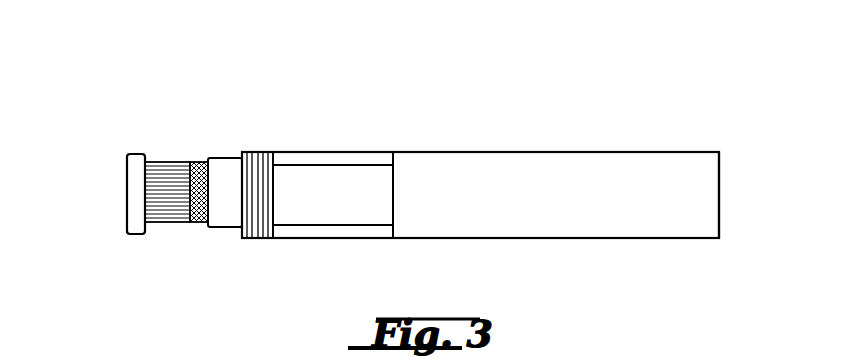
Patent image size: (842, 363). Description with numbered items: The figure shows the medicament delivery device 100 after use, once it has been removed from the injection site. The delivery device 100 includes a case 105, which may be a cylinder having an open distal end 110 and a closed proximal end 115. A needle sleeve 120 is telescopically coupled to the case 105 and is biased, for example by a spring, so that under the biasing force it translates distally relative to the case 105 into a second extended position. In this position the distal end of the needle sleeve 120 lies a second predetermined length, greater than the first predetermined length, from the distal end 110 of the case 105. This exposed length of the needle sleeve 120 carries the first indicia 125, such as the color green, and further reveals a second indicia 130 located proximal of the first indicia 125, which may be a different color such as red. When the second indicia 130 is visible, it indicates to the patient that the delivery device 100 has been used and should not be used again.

The medicament delivery device 100 is at (681, 103).
The case 105 is at (508, 152).
The distal end 110 is at (222, 158).
The proximal end 115 is at (719, 240).
The needle sleeve 120 is at (175, 228).
The first indicia 125 is at (170, 196).
The second indicia 130 is at (200, 162).